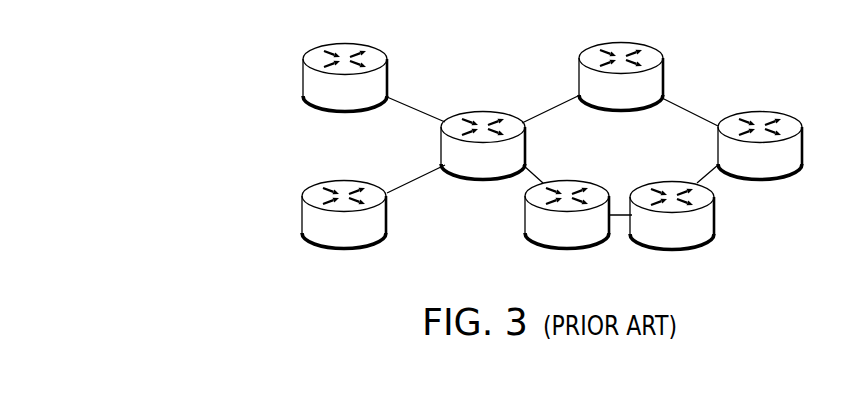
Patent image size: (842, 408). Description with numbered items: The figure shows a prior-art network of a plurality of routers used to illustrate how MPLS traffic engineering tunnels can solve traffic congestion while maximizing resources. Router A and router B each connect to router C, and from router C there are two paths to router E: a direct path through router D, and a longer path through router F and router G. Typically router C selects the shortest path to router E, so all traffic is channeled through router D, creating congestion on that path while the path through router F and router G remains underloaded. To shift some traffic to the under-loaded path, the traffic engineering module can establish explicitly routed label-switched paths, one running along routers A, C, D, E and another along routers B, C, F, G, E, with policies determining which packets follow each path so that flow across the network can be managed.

The router A is at (345, 62).
The router B is at (344, 230).
The router C is at (483, 130).
The router D is at (621, 62).
The router E is at (760, 130).
The router F is at (567, 230).
The router G is at (672, 231).